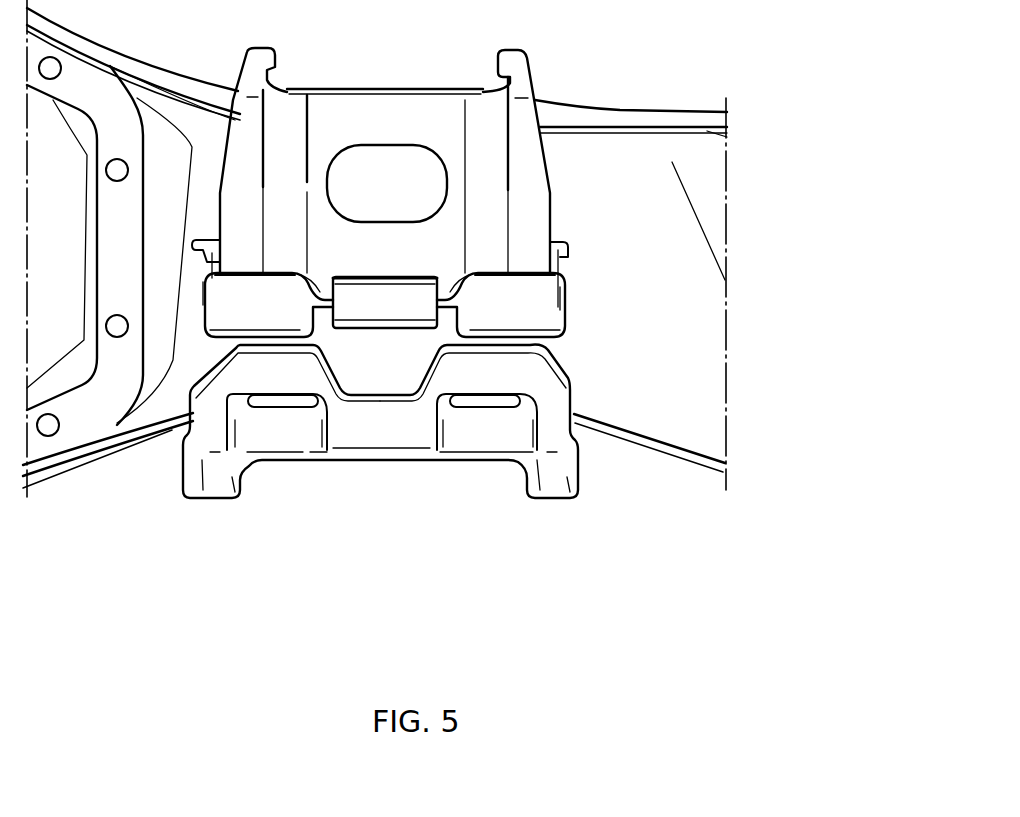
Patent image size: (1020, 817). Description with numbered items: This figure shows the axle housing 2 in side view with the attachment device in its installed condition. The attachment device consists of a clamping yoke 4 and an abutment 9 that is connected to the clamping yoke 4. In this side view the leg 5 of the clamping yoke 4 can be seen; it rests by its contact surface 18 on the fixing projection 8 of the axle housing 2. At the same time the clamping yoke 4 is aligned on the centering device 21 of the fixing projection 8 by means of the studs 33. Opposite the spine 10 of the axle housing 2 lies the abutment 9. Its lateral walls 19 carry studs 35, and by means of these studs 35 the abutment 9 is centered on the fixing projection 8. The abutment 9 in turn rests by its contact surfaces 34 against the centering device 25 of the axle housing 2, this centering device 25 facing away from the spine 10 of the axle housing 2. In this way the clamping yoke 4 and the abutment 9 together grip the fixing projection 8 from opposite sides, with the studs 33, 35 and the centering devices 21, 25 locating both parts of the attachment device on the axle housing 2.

The axle housing 2 is at (662, 324).
The clamping yoke 4 is at (268, 381).
The leg 5 is at (228, 209).
The fixing projection 8 is at (387, 168).
The centering device 21 is at (367, 290).
The abutment 9 is at (380, 431).
The spine 10 is at (590, 110).
The contact surface 18 is at (266, 292).
The lateral walls 19 is at (565, 492).
The centering device 25 is at (448, 268).
The studs 33 is at (322, 258).
The contact surfaces 34 is at (354, 343).
The studs 35 is at (443, 336).